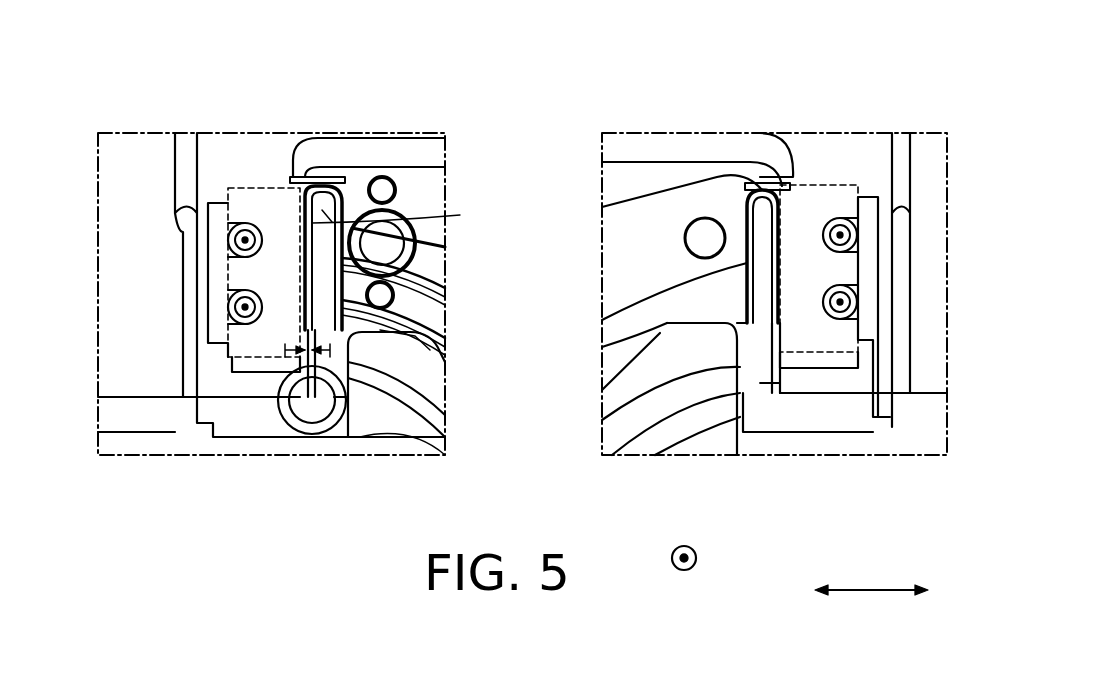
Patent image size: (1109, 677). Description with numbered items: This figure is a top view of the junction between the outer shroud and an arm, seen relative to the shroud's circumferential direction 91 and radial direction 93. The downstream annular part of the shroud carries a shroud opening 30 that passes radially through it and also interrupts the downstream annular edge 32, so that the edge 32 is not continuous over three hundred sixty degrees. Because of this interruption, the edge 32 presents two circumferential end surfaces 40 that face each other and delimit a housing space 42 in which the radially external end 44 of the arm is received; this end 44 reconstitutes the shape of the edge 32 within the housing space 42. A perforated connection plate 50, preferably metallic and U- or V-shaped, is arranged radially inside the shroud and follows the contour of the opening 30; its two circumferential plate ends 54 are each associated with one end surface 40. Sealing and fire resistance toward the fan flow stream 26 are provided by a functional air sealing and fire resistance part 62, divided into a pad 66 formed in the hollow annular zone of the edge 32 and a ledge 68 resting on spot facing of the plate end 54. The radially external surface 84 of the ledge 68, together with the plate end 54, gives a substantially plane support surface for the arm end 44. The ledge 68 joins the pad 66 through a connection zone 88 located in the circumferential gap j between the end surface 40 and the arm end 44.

The fan flow stream 26 is at (884, 132).
The shroud opening 30 is at (523, 270).
The downstream annular edge 32 is at (113, 308).
The circumferential end surface 40 is at (320, 363).
The housing space 42 is at (523, 333).
The radially external end of the arm 44 is at (382, 430).
The perforated connection plate 50 is at (688, 148).
The circumferential plate end 54 is at (410, 175).
The functional air sealing and fire resistance part 62 is at (247, 186).
The pad 66 is at (272, 222).
The ledge 68 is at (330, 195).
The radially external surface of the ledge 84 is at (325, 203).
The connection zone 88 is at (840, 470).
The circumferential direction 91 is at (870, 590).
The radial direction 93 is at (672, 558).
The circumferential gap j is at (287, 352).